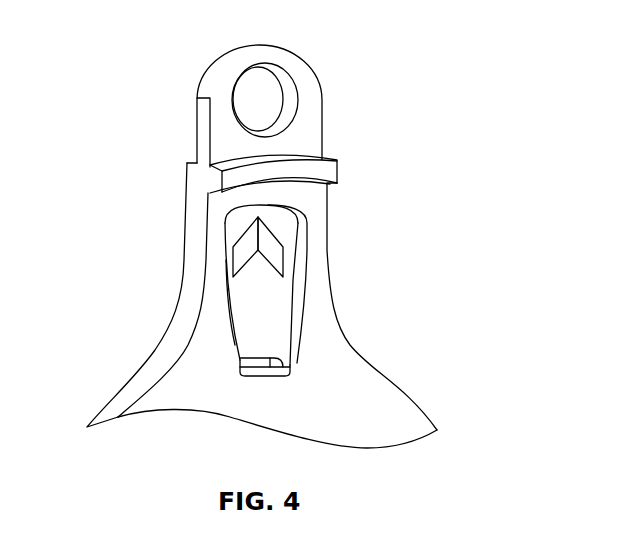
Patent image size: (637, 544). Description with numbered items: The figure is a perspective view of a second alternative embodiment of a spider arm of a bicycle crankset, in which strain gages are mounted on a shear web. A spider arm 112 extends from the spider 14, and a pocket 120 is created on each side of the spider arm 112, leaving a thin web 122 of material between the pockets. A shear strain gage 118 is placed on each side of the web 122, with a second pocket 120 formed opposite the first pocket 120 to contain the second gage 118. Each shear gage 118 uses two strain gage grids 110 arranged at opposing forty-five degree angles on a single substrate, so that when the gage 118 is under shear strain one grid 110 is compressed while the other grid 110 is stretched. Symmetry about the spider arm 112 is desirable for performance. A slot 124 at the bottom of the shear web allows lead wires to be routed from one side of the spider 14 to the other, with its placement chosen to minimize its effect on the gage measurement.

The spider 14 is at (392, 402).
The strain gage grids 110 is at (242, 250).
The spider arm 112 is at (220, 202).
The shear strain gage 118 is at (270, 226).
The pocket 120 is at (279, 306).
The web 122 is at (245, 315).
The slot 124 is at (247, 363).